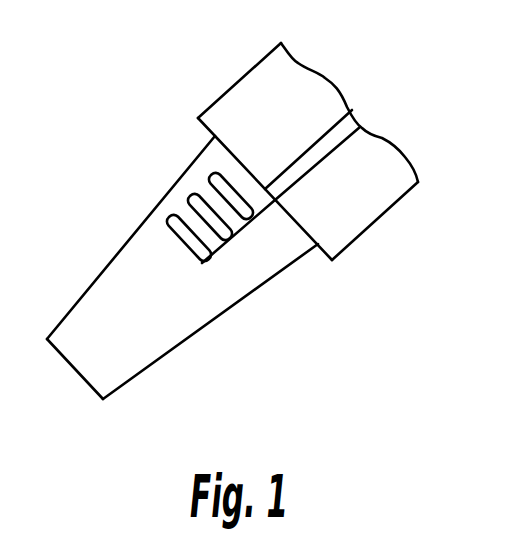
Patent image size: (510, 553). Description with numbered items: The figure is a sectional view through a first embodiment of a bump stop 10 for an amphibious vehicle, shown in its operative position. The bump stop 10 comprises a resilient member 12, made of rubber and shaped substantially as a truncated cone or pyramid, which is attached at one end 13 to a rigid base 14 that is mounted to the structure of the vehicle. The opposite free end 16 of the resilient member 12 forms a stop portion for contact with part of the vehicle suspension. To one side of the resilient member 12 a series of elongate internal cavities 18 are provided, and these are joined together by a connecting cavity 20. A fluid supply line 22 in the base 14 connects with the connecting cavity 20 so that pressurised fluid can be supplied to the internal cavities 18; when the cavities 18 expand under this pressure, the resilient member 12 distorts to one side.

The bump stop 10 is at (134, 74).
The resilient member 12 is at (140, 339).
The one end 13 is at (291, 224).
The rigid base 14 is at (248, 89).
The free end 16 is at (75, 371).
The internal cavities 18 is at (212, 176).
The connecting cavity 20 is at (221, 244).
The fluid supply line 22 is at (323, 148).